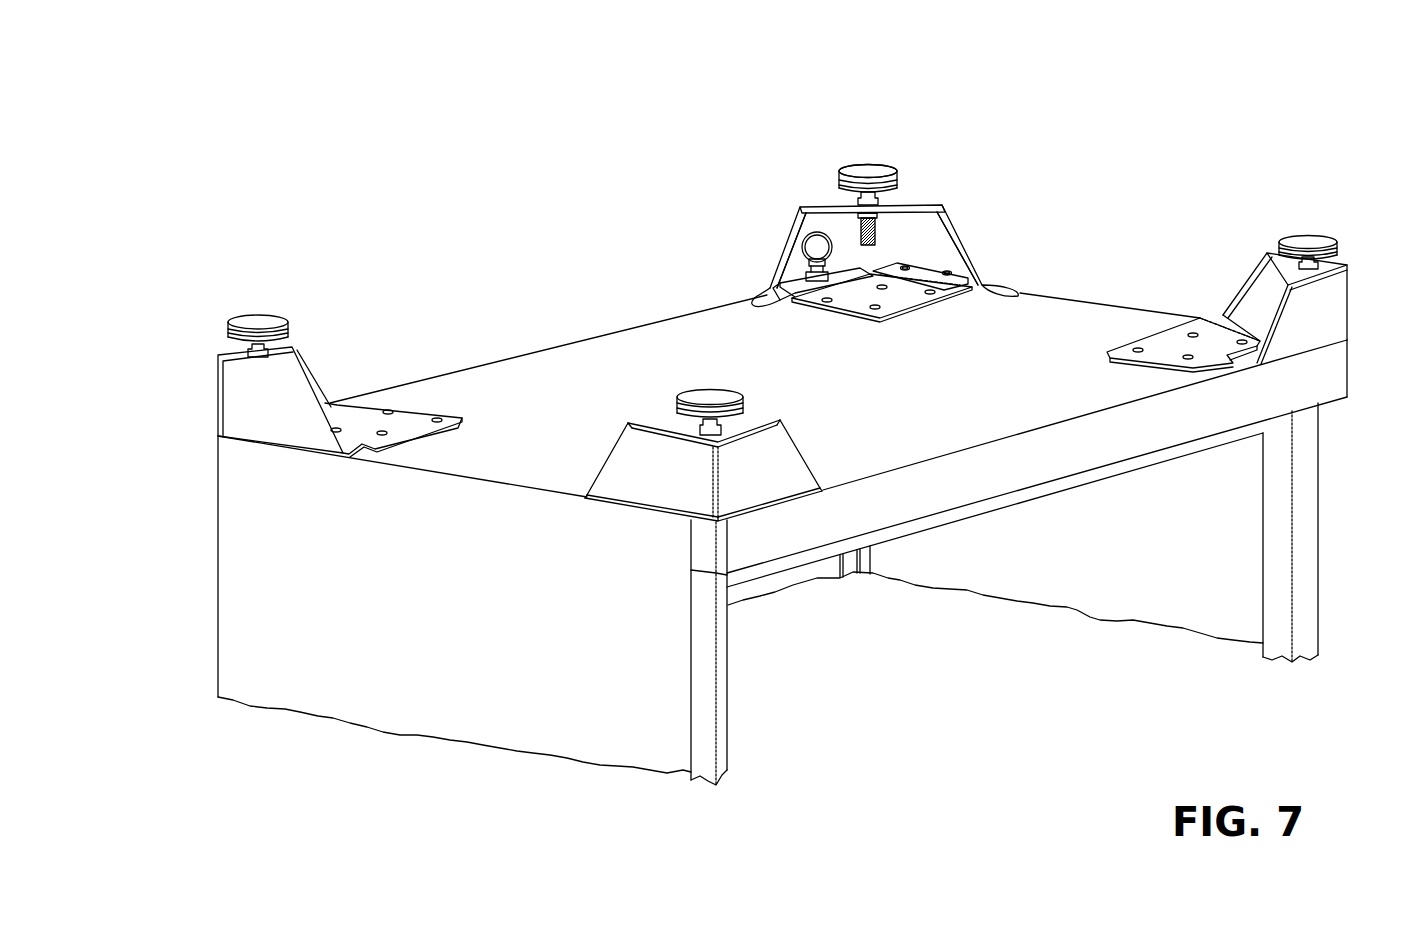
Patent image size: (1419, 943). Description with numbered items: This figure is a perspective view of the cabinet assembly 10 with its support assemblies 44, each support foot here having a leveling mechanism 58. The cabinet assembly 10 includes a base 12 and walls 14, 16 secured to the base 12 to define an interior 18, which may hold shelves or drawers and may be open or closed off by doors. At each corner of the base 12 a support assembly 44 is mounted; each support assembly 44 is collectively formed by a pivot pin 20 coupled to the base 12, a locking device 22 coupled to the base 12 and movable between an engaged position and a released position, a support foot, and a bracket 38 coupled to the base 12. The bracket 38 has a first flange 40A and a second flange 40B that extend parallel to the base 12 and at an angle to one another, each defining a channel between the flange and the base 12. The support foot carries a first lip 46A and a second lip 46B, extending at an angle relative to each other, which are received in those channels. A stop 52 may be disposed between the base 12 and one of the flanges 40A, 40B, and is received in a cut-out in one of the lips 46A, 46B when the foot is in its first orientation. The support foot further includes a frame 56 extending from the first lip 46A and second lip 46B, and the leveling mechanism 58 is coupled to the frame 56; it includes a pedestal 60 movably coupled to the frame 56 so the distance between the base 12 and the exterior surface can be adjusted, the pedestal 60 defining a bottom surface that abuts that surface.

The cabinet assembly 10 is at (196, 157).
The base 12 is at (574, 377).
The wall 14 is at (1311, 540).
The wall 16 is at (537, 697).
The interior 18 is at (762, 627).
The pivot pin 20 is at (979, 272).
The locking device 22 is at (806, 253).
The bracket 38 is at (855, 298).
The first flange 40A is at (931, 270).
The second flange 40B is at (786, 273).
The support assembly 44 is at (231, 302).
The first lip 46A is at (1021, 293).
The second lip 46B is at (752, 300).
The stop 52 is at (911, 260).
The frame 56 is at (901, 222).
The leveling mechanism 58 is at (852, 165).
The pedestal 60 is at (875, 168).